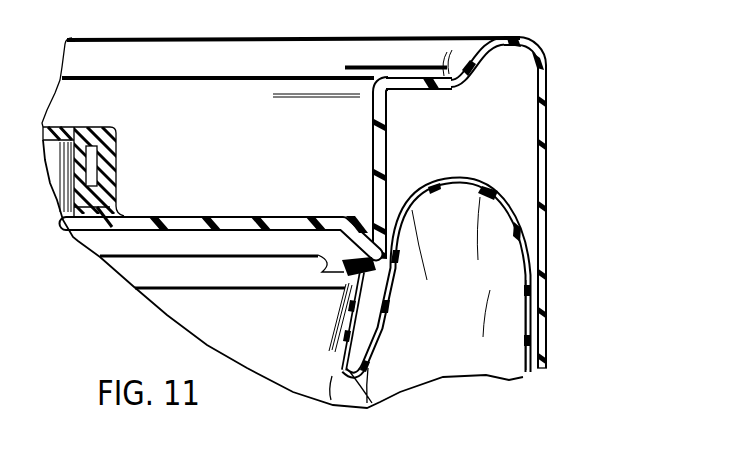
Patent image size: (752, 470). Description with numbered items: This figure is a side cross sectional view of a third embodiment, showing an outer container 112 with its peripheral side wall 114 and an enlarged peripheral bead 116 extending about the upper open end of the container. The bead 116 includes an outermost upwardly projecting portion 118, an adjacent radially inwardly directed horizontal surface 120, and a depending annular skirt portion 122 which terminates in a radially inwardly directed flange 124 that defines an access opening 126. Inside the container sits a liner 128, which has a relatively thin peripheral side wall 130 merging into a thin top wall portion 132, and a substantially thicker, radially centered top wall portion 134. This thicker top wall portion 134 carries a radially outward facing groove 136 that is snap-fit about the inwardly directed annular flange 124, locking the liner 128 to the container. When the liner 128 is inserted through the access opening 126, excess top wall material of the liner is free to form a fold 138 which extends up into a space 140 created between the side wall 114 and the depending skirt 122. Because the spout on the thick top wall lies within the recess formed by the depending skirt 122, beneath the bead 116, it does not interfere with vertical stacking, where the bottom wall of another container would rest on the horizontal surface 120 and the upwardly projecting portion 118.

The outer container 112 is at (553, 302).
The peripheral side wall 114 is at (543, 340).
The peripheral bead 116 is at (566, 70).
The upwardly projecting portion 118 is at (492, 35).
The horizontal surface 120 is at (415, 78).
The depending annular skirt portion 122 is at (372, 118).
The radially inwardly directed flange 124 is at (366, 264).
The access opening 126 is at (162, 140).
The liner 128 is at (280, 212).
The peripheral side wall 130 is at (523, 348).
The top wall portion 132 is at (447, 182).
The top wall portion 134 is at (157, 216).
The groove 136 is at (340, 262).
The fold 138 is at (376, 408).
The space 140 is at (519, 113).